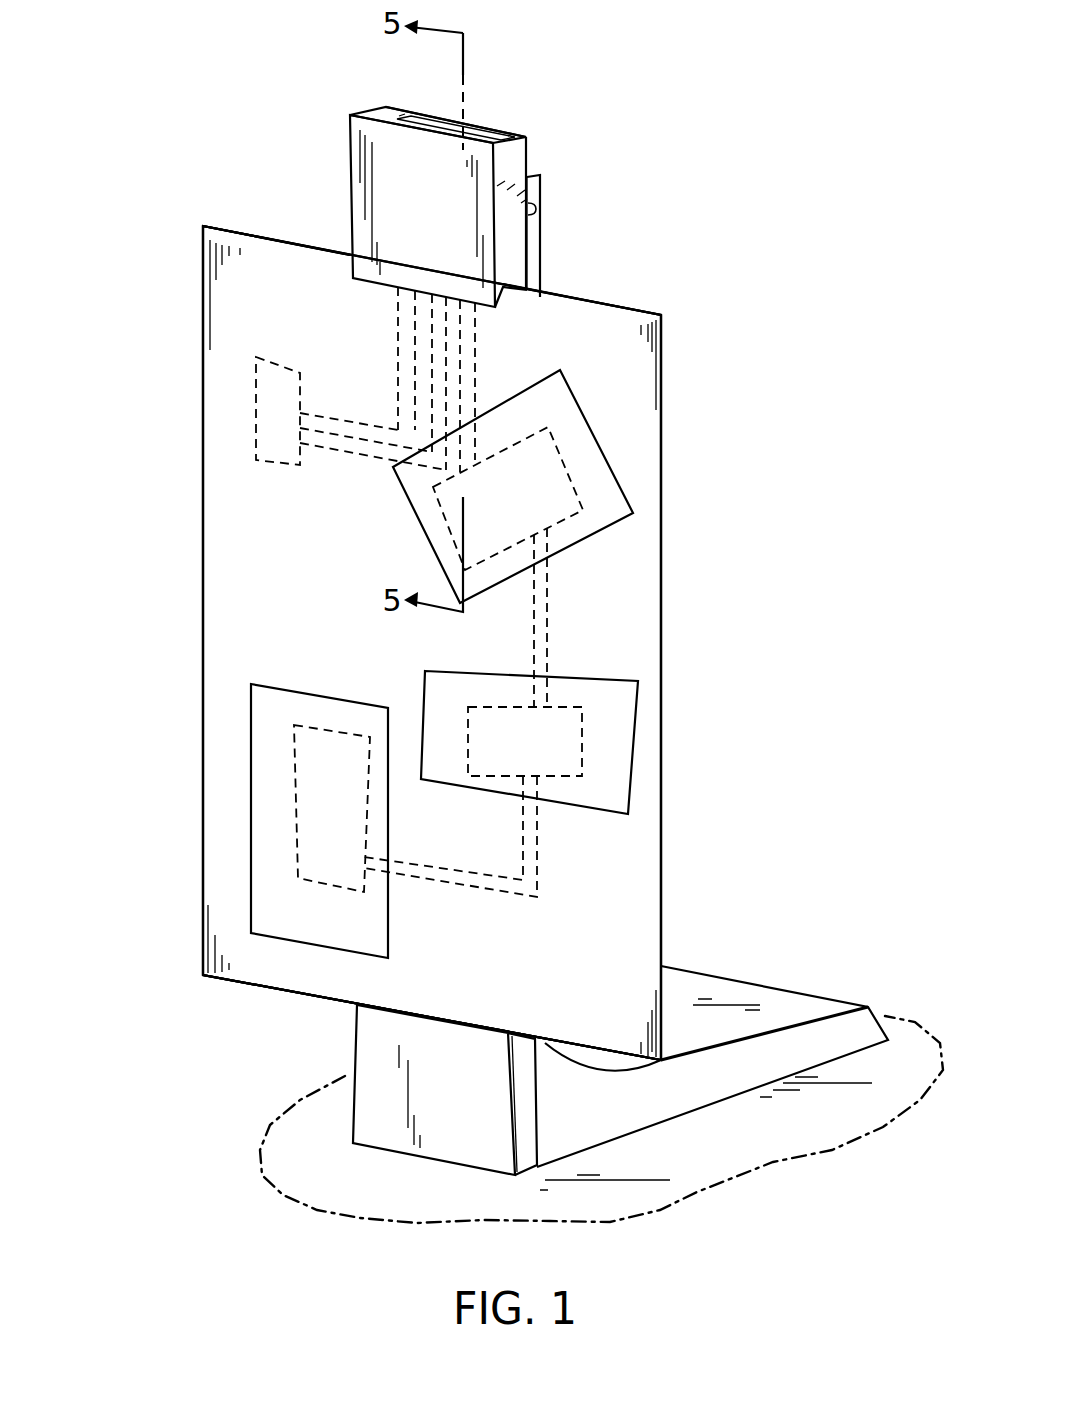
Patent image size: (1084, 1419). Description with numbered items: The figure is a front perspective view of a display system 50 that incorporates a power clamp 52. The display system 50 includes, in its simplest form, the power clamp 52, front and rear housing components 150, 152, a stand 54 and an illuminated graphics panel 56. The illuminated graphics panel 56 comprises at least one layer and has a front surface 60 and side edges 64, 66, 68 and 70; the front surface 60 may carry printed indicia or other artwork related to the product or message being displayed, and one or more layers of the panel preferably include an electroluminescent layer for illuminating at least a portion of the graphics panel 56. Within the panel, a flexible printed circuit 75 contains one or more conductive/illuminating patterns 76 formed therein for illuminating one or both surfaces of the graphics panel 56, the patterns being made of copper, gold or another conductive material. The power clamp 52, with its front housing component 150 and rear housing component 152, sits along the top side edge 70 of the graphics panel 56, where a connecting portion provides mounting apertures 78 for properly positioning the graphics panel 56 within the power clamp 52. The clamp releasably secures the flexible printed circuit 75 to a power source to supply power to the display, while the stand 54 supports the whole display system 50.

The display system 50 is at (733, 579).
The power clamp 52 is at (430, 121).
The stand 54 is at (750, 1070).
The illuminated graphics panel 56 is at (258, 962).
The front surface 60 is at (625, 900).
The side edge 64 is at (203, 615).
The side edge 66 is at (661, 640).
The side edge 68 is at (289, 993).
The top side edge 70 is at (594, 301).
The flexible printed circuit 75 is at (265, 277).
The conductive/illuminating patterns 76 is at (257, 404).
The mounting apertures 78 is at (606, 467).
The front housing component 150 is at (457, 188).
The rear housing component 152 is at (541, 238).